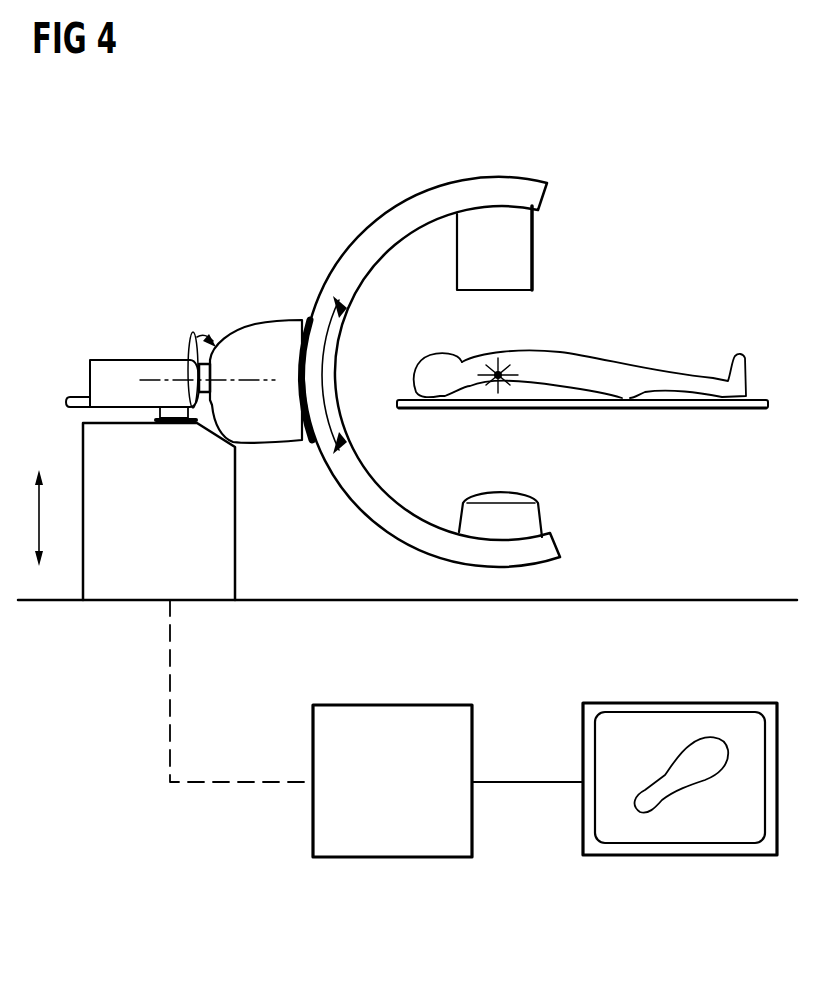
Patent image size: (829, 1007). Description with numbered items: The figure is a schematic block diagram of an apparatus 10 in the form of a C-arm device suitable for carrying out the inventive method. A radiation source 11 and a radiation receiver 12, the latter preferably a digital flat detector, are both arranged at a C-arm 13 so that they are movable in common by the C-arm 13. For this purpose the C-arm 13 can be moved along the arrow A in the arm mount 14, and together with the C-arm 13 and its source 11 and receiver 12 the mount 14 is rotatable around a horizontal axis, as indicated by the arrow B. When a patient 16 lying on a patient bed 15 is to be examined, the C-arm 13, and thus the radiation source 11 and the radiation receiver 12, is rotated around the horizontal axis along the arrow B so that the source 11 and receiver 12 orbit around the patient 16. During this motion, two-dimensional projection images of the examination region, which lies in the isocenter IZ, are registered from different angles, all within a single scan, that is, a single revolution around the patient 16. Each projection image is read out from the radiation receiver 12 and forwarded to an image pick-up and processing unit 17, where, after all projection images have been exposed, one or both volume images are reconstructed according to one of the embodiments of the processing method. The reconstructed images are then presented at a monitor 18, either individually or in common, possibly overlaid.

The apparatus 10 is at (538, 125).
The radiation source 11 is at (530, 517).
The radiation receiver 12 is at (538, 262).
The C-arm 13 is at (393, 223).
The arm mount 14 is at (268, 340).
The patient bed 15 is at (685, 410).
The patient 16 is at (542, 360).
The image pick-up and processing unit 17 is at (407, 705).
The monitor 18 is at (711, 703).
The isocenter IZ is at (494, 366).
The arrow A is at (325, 342).
The arrow B is at (190, 330).